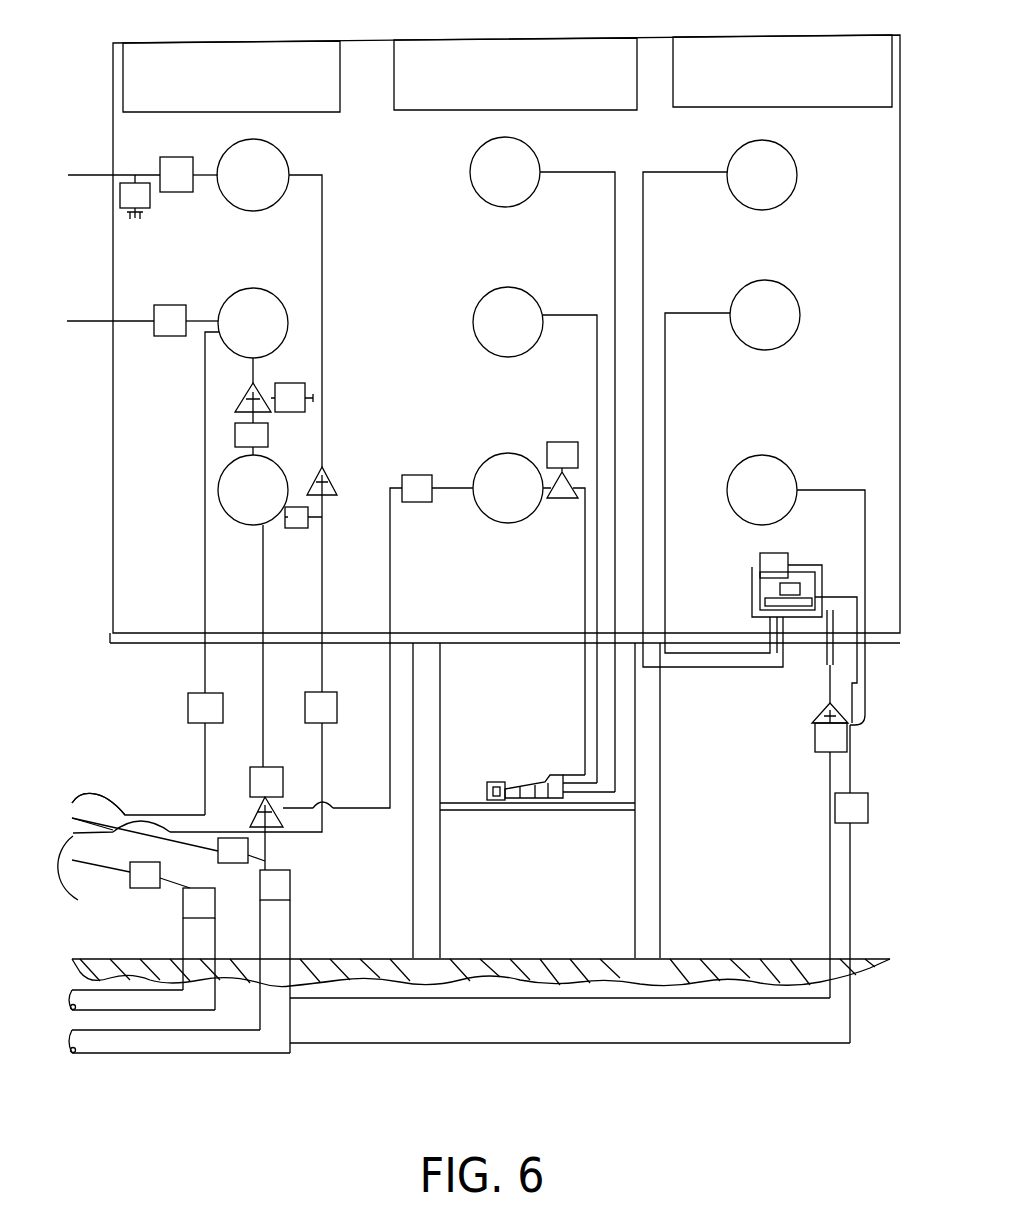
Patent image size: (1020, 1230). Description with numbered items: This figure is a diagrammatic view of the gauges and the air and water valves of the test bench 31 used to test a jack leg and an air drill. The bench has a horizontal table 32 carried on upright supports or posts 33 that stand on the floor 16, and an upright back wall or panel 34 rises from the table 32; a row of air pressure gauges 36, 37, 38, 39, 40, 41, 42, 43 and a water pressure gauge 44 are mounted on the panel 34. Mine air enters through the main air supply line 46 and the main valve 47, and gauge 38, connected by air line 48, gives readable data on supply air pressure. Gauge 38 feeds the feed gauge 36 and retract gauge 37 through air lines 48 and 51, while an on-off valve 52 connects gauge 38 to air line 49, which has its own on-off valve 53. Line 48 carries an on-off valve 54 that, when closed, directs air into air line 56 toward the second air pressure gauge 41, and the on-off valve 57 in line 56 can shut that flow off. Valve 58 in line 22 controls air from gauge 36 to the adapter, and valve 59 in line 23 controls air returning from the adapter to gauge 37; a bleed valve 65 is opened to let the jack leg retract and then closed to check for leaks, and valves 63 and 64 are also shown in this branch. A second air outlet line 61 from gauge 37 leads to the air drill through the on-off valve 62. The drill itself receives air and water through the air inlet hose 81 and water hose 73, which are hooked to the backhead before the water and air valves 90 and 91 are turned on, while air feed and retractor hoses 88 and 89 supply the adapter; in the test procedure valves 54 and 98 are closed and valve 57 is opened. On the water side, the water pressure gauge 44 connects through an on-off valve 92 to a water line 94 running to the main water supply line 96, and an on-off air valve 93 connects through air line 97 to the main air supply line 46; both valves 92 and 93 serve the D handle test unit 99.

The floor 16 is at (718, 958).
The line 22 is at (86, 175).
The line 23 is at (88, 321).
The test bench 31 is at (731, 24).
The horizontal table 32 is at (138, 640).
The upright supports or posts 33 is at (413, 863).
The upright back wall or panel 34 is at (653, 55).
The air pressure gauge 36 is at (283, 153).
The air pressure gauge 37 is at (244, 288).
The air pressure gauge 38 is at (253, 525).
The air pressure gauge 39 is at (484, 206).
The air pressure gauge 40 is at (471, 323).
The second air pressure gauge 41 is at (478, 466).
The air pressure gauge 42 is at (750, 210).
The air pressure gauge 43 is at (751, 348).
The water pressure gauge 44 is at (727, 484).
The mine air supply line 46 is at (214, 1046).
The main valve 47 is at (290, 883).
The air line 48 is at (264, 592).
The air line 49 is at (323, 252).
The air line 51 is at (252, 384).
The on-off valve 52 is at (297, 528).
The on-off valve 53 is at (337, 706).
The on-off valve 54 is at (266, 767).
The air line 56 is at (390, 588).
The on-off valve 57 is at (422, 502).
The on-off valve 58 is at (176, 192).
The on-off valve 59 is at (170, 336).
The second air outlet line 61 is at (205, 448).
The on-off valve 62 is at (188, 702).
The valve 63 is at (268, 436).
The valve 64 is at (307, 402).
The bleed valve 65 is at (120, 200).
The water hose 73 is at (100, 868).
The air inlet hose 81 is at (100, 804).
The air feed hose 88 is at (74, 879).
The retractor hose 89 is at (80, 794).
The water valve 90 is at (218, 858).
The air valve 91 is at (145, 888).
The on-off valve 92 is at (815, 746).
The on-off air valve 93 is at (835, 809).
The water line 94 is at (413, 1000).
The main water supply line 96 is at (94, 1000).
The air line 97 is at (546, 1043).
The valve 98 is at (562, 442).
The D handle test unit 99 is at (740, 557).